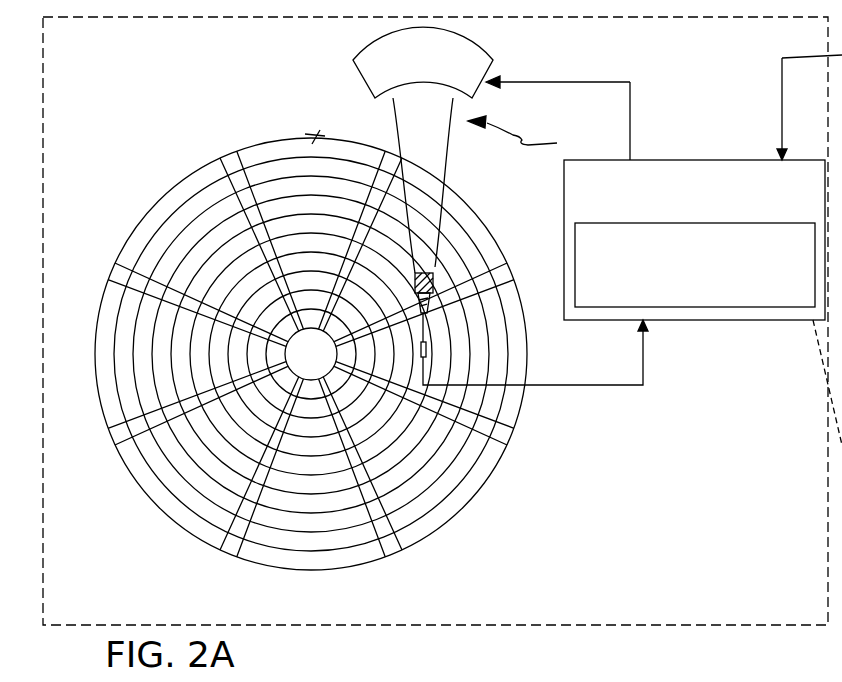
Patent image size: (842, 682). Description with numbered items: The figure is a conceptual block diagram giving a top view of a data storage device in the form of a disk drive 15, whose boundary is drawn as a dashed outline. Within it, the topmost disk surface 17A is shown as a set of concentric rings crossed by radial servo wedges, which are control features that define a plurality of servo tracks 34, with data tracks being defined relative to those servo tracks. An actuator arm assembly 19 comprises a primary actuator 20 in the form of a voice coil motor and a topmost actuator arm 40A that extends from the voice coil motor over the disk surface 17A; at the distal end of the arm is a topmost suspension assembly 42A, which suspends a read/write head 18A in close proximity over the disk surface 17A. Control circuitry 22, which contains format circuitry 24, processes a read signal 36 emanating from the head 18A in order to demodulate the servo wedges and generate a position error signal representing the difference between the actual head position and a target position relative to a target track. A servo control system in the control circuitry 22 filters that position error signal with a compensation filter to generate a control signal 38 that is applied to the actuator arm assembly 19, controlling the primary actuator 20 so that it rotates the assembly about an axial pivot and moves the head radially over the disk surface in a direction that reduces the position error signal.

The disk drive 15 is at (757, 626).
The topmost disk surface 17A is at (161, 186).
The read/write head 18A is at (428, 357).
The actuator arm assembly 19 is at (540, 660).
The primary actuator 20 is at (480, 90).
The control circuitry 22 is at (694, 240).
The format circuitry 24 is at (695, 265).
The servo tracks 34 is at (316, 140).
The read signal 36 is at (541, 398).
The control signal 38 is at (632, 100).
The topmost actuator arm 40A is at (445, 165).
The topmost suspension assembly 42A is at (399, 679).